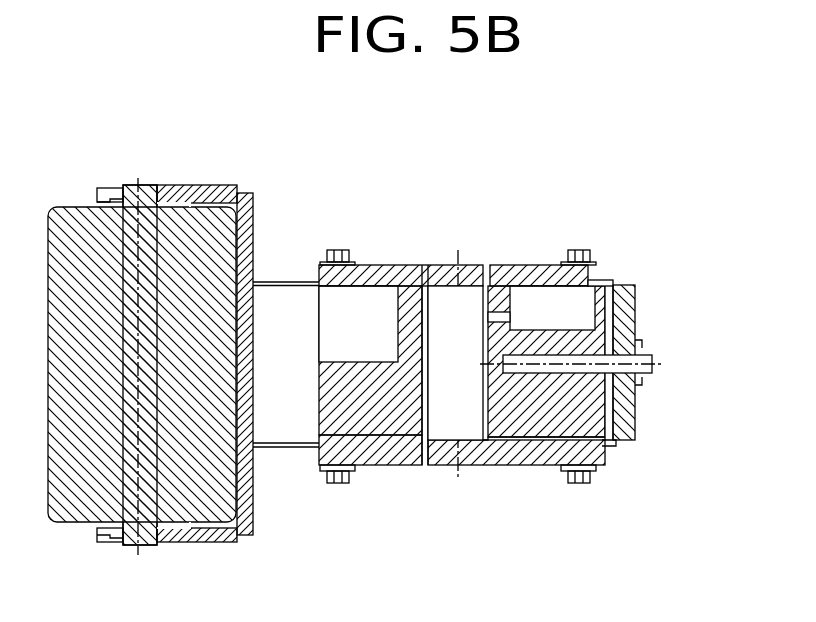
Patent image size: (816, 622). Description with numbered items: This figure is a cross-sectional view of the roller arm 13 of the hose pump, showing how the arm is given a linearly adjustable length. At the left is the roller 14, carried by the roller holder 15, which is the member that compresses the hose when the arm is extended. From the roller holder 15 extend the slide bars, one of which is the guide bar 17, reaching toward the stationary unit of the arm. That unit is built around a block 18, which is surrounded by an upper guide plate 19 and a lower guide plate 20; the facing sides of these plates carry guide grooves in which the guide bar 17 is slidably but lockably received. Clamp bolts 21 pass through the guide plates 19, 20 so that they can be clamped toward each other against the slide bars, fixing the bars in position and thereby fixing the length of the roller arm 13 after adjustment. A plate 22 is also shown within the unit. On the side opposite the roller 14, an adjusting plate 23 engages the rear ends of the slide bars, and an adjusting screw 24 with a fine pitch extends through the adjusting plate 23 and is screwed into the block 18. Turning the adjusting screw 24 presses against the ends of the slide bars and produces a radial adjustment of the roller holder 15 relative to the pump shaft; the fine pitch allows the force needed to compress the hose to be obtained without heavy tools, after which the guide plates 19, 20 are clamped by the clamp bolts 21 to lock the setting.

The roller arm 13 is at (532, 348).
The roller 14 is at (85, 458).
The roller holder 15 is at (245, 428).
The guide bar 17 is at (292, 410).
The block 18 is at (580, 407).
The upper guide plate 19 is at (602, 272).
The lower guide plate 20 is at (540, 453).
The clamp bolt 21 is at (333, 248).
The spacer plate 22 is at (429, 447).
The adjusting plate 23 is at (633, 305).
The adjusting screw 24 is at (572, 360).